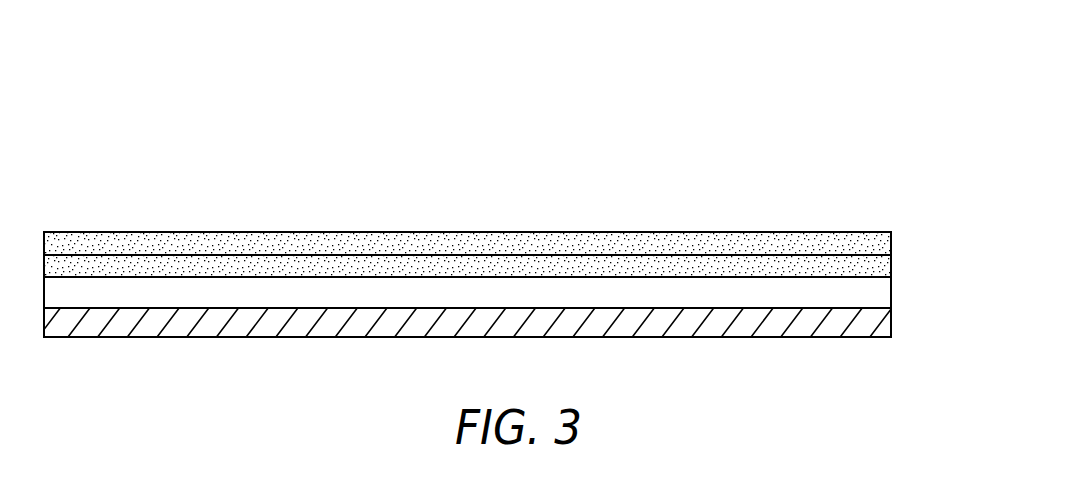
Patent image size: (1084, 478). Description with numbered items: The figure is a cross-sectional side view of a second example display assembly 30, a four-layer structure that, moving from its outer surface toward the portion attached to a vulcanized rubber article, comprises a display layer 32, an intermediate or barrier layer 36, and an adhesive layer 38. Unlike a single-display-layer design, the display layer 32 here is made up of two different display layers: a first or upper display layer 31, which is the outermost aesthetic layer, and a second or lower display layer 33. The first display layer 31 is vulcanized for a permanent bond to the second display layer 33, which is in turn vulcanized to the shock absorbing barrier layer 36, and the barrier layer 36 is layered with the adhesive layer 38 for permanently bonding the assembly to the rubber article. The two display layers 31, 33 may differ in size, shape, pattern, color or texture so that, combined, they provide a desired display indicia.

The display assembly 30 is at (793, 179).
The first display layer 31 is at (677, 247).
The display layer 32 is at (900, 233).
The second display layer 33 is at (705, 266).
The barrier layer 36 is at (812, 292).
The adhesive layer 38 is at (747, 322).